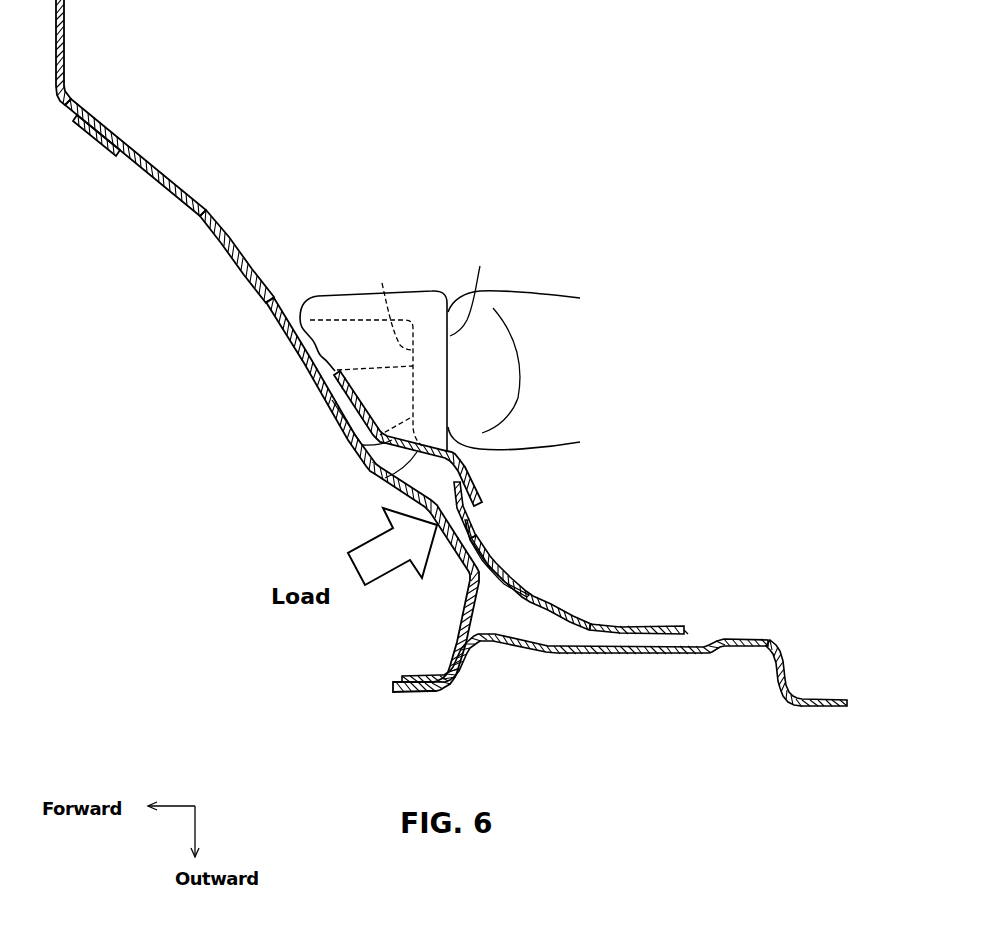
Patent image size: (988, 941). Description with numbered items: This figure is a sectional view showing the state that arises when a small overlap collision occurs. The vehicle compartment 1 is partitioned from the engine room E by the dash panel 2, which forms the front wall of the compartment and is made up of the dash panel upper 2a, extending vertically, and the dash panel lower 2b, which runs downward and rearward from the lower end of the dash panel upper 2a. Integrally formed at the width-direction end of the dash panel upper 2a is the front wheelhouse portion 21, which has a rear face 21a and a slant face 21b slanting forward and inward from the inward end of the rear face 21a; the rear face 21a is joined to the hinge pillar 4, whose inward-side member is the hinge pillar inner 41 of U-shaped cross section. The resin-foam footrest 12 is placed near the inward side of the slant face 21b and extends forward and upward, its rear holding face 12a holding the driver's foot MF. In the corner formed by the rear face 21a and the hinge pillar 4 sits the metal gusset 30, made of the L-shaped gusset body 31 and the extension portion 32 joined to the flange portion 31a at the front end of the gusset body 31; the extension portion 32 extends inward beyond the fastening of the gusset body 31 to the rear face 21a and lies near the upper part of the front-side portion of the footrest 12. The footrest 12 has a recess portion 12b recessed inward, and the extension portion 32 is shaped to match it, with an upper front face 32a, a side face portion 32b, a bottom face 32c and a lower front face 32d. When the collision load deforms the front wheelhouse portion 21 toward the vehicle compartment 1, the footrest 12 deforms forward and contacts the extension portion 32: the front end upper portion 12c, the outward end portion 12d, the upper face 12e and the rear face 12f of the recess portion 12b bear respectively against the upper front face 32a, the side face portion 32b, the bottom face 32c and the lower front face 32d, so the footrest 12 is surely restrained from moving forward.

The vehicle compartment 1 is at (666, 247).
The dash panel 2 is at (134, 108).
The dash panel upper 2a is at (136, 157).
The dash panel lower 2b is at (64, 71).
The front wheelhouse portion 21 is at (368, 423).
The rear face 21a is at (481, 540).
The slant face 21b is at (248, 250).
The footrest 12 is at (369, 371).
The holding face 12a is at (475, 291).
The recess portion 12b is at (360, 350).
The front end upper portion 12c is at (316, 337).
The outward end portion 12d is at (387, 480).
The upper face 12e is at (327, 331).
The rear face 12f is at (391, 306).
The foot MF is at (505, 290).
The engine room E is at (207, 537).
The gusset 30 is at (482, 502).
The gusset body 31 is at (639, 621).
The flange portion 31a is at (480, 518).
The extension portion 32 is at (412, 438).
The upper front face 32a is at (332, 403).
The side face portion 32b is at (373, 463).
The bottom face 32c is at (373, 403).
The lower front face 32d is at (366, 441).
The hinge pillar 4 is at (624, 630).
The hinge pillar inner 41 is at (742, 636).